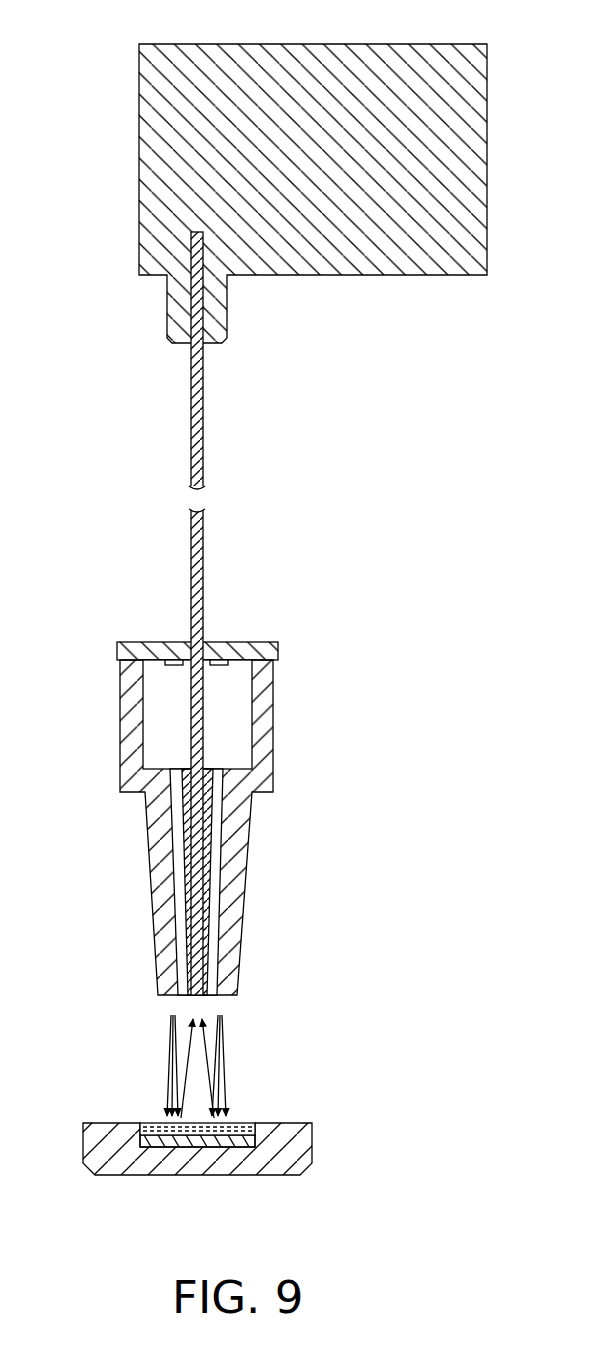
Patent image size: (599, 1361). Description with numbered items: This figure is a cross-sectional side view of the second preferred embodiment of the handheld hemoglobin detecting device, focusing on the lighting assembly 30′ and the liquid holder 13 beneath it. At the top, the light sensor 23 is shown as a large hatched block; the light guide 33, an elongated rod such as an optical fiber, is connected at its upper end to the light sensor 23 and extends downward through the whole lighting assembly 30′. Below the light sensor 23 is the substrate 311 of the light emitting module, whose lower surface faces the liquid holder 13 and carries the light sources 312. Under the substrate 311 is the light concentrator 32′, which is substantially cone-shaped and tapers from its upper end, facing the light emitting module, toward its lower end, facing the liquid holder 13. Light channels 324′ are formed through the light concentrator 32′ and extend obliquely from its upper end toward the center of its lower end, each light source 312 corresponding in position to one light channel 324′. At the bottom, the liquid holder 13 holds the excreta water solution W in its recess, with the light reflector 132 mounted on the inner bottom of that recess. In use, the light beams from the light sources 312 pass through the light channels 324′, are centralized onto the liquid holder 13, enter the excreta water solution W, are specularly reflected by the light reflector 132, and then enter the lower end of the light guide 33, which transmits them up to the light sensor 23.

The light sensor 23 is at (315, 46).
The light guide 33 is at (192, 456).
The lighting assembly 30′ is at (246, 612).
The substrate 311 is at (141, 648).
The light source 312 is at (228, 663).
The light concentrator 32′ is at (268, 760).
The light channel 324′ is at (213, 898).
The excreta water solution W is at (247, 1123).
The liquid holder 13 is at (112, 1172).
The light reflector 132 is at (205, 1145).